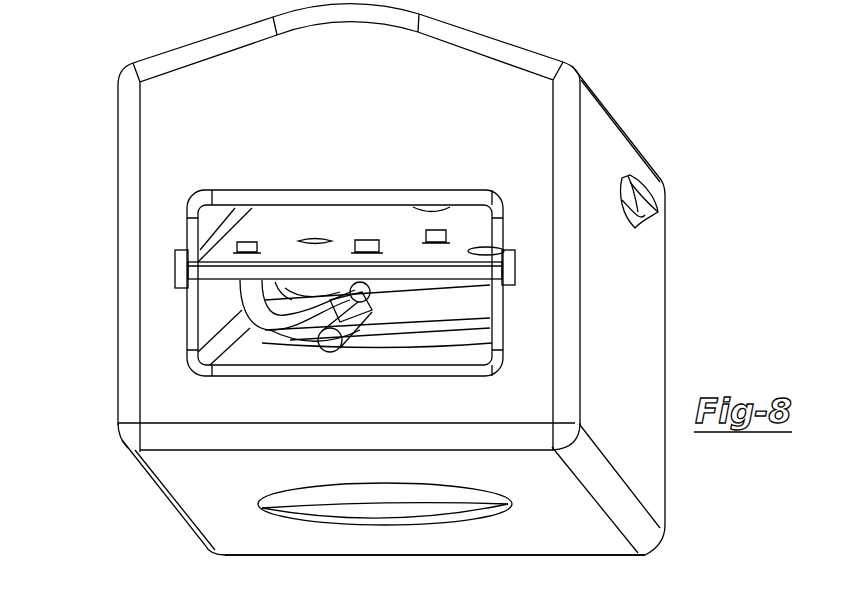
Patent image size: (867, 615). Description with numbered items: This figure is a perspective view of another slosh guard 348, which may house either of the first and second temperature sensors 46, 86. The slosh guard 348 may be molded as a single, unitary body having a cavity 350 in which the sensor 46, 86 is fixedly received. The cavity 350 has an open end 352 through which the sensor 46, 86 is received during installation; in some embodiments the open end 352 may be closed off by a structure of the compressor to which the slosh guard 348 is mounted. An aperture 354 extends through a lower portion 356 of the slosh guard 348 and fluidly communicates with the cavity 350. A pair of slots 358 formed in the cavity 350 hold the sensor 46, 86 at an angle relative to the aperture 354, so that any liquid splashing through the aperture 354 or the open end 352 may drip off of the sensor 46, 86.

The slosh guard 348 is at (559, 41).
The cavity 350 is at (443, 357).
The open end 352 is at (430, 207).
The aperture 354 is at (338, 497).
The lower portion 356 is at (560, 542).
The slots 358 is at (177, 266).
The first temperature sensor 46 is at (354, 432).
The second temperature sensor 86 is at (330, 258).